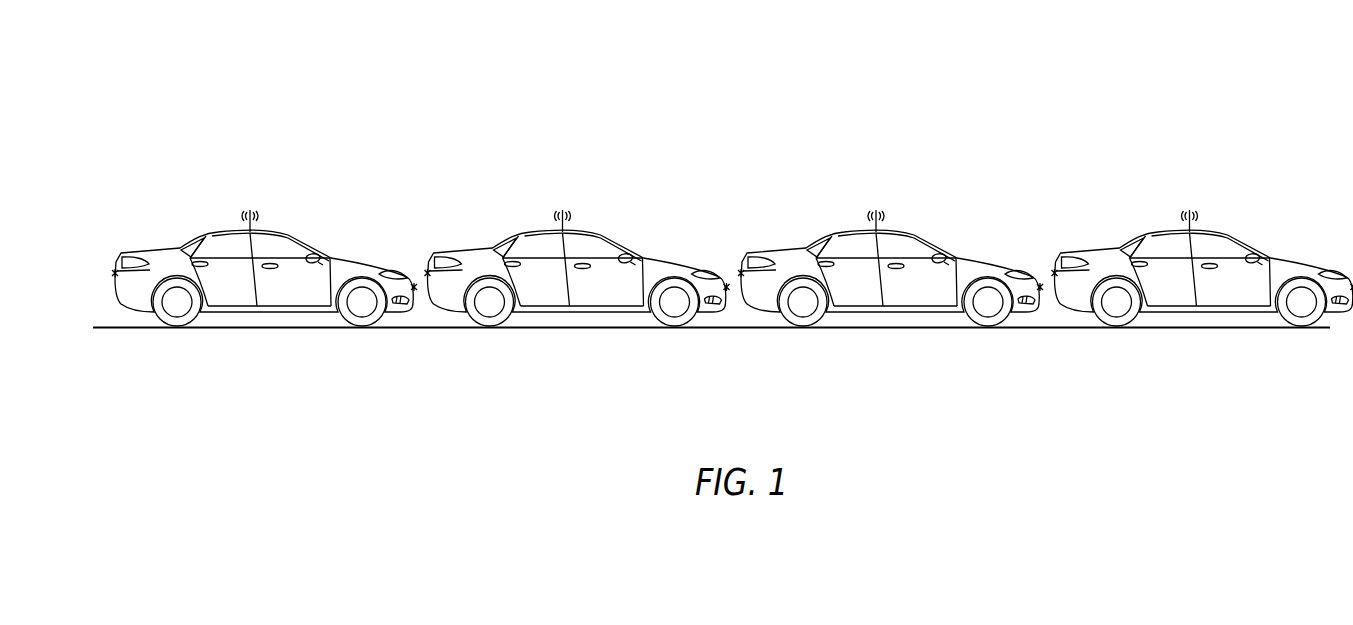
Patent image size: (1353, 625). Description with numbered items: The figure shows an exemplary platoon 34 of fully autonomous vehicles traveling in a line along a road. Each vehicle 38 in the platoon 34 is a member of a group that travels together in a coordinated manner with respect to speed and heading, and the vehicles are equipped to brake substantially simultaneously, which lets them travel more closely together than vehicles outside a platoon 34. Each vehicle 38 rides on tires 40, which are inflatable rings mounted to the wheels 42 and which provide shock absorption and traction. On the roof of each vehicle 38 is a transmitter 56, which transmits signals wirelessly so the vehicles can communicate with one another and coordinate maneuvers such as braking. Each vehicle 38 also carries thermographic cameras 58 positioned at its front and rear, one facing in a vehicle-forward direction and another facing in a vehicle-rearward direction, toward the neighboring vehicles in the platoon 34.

The platoon 34 is at (1060, 81).
The vehicle 38 is at (734, 258).
The tire 40 is at (715, 322).
The wheel 42 is at (723, 339).
The transmitter 56 is at (738, 203).
The thermographic camera 58 is at (112, 272).